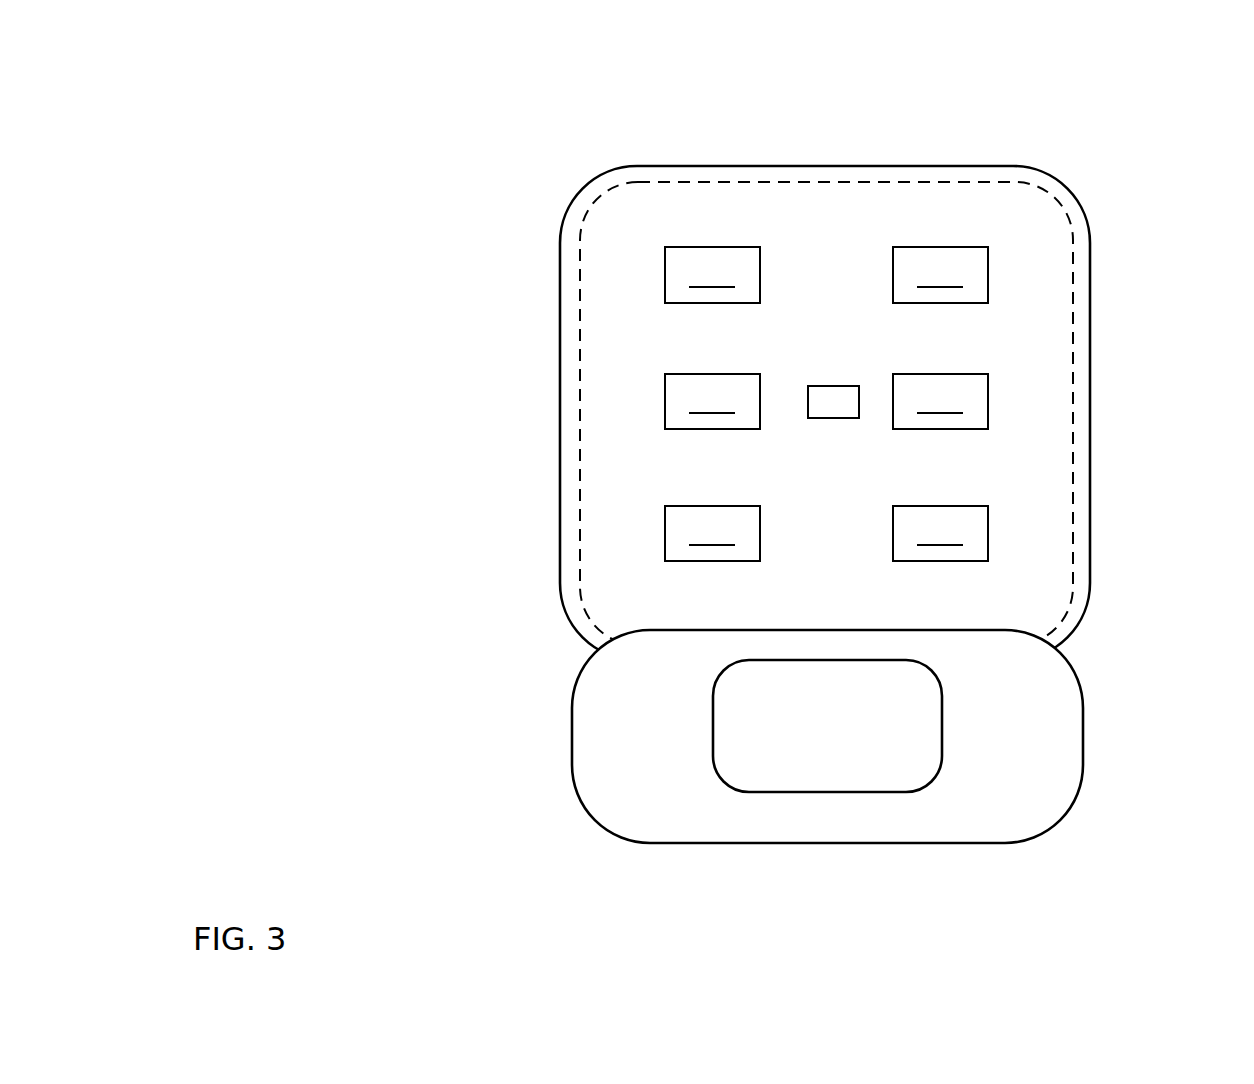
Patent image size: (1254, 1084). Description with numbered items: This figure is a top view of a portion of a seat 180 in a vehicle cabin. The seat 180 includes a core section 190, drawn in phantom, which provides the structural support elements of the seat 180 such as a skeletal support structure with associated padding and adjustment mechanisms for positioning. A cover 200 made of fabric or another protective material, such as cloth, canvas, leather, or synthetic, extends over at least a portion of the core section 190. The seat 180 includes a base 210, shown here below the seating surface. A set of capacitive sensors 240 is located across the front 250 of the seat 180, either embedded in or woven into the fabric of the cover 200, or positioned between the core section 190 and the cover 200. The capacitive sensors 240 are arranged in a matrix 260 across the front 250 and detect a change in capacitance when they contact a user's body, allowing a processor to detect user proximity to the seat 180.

The seat 180 is at (363, 110).
The core section 190 is at (590, 613).
The cover 200 is at (1090, 268).
The base 210 is at (500, 428).
The capacitive sensors 240 is at (835, 380).
The front 250 is at (1118, 527).
The matrix 260 is at (618, 263).